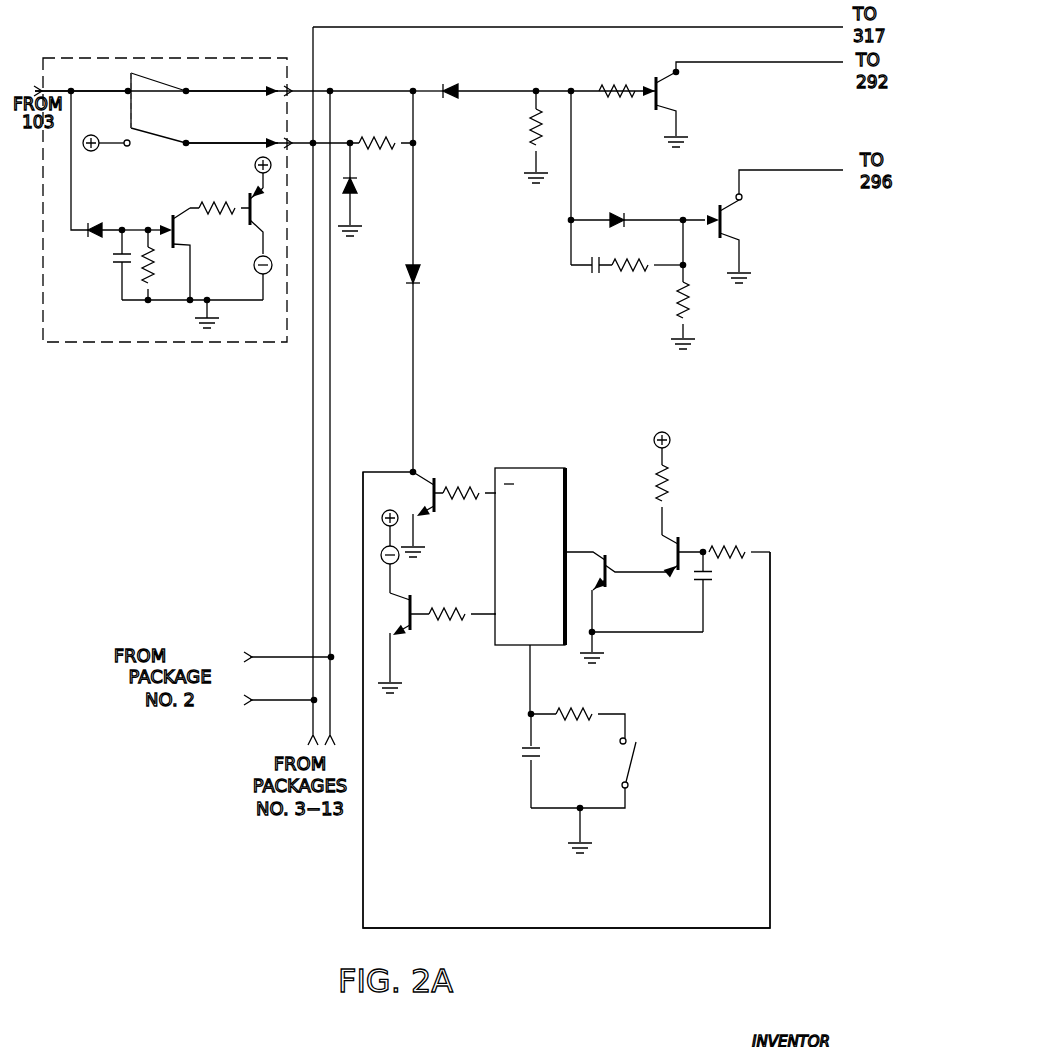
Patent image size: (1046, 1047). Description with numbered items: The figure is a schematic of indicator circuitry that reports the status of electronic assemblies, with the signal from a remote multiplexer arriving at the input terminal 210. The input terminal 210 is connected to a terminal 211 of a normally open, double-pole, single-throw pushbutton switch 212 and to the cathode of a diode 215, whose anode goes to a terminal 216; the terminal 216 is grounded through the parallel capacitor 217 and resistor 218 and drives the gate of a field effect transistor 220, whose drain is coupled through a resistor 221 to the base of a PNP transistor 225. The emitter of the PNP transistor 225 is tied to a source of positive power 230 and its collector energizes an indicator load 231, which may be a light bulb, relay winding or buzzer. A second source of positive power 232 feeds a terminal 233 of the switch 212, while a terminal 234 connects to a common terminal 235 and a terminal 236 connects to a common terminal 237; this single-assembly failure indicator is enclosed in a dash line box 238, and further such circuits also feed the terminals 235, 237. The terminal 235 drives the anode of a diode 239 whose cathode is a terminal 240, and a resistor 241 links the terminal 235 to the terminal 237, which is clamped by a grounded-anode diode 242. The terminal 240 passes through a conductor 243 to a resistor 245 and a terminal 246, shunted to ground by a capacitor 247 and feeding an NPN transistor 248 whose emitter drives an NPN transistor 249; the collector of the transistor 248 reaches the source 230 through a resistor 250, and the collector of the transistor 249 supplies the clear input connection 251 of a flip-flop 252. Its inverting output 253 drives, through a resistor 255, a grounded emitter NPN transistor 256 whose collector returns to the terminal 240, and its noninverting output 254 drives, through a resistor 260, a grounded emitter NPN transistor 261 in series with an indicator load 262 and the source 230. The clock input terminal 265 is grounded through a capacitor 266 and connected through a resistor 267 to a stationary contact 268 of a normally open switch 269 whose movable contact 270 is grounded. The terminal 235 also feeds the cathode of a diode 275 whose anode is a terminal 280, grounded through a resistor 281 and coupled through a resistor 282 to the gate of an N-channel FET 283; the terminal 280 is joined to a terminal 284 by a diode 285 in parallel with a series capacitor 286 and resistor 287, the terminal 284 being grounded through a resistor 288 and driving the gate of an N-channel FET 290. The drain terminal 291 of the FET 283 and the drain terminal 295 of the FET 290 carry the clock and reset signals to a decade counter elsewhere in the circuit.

The input terminal 210 is at (30, 86).
The terminal 211 is at (127, 87).
The pushbutton switch 212 is at (192, 122).
The diode 215 is at (99, 219).
The terminal 216 is at (124, 228).
The capacitor 217 is at (113, 258).
The resistor 218 is at (152, 268).
The field effect transistor 220 is at (210, 242).
The resistor 221 is at (211, 206).
The PNP transistor 225 is at (284, 218).
The source of positive power 230 is at (256, 164).
The indicator load 231 is at (254, 261).
The source of positive power 232 is at (110, 152).
The terminal 233 is at (130, 146).
The terminal 234 is at (186, 88).
The terminal 235 is at (332, 89).
The terminal 236 is at (186, 140).
The terminal 237 is at (316, 141).
The dash line box 238 is at (196, 58).
The diode 239 is at (430, 277).
The terminal 240 is at (416, 470).
The resistor 241 is at (371, 143).
The diode 242 is at (357, 183).
The conductor 243 is at (536, 930).
The resistor 245 is at (733, 548).
The terminal 246 is at (703, 548).
The capacitor 247 is at (707, 580).
The NPN transistor 248 is at (672, 563).
The NPN transistor 249 is at (604, 586).
The resistor 250 is at (670, 481).
The reset input line 251 is at (568, 552).
The flip-flop 252 is at (530, 468).
The inverting output 253 is at (494, 490).
The noninverting output 254 is at (494, 610).
The resistor 255 is at (453, 499).
The grounded emitter NPN transistor 256 is at (427, 507).
The resistor 260 is at (450, 620).
The grounded emitter NPN transistor 261 is at (404, 624).
The indicator load 262 is at (398, 560).
The clock input terminal 265 is at (528, 652).
The capacitor 266 is at (528, 750).
The resistor 267 is at (571, 712).
The stationary contact 268 is at (630, 740).
The normally open switch 269 is at (622, 777).
The movable contact 270 is at (633, 787).
The diode 275 is at (454, 78).
The terminal 280 is at (538, 87).
The resistor 281 is at (530, 130).
The resistor 282 is at (600, 88).
The N-channel FET 283 is at (696, 106).
The terminal 284 is at (684, 215).
The diode 285 is at (612, 216).
The capacitor 286 is at (590, 270).
The resistor 287 is at (621, 262).
The resistor 288 is at (688, 302).
The N-channel FET 290 is at (763, 234).
The drain terminal 291 is at (680, 72).
The drain terminal 295 is at (745, 198).